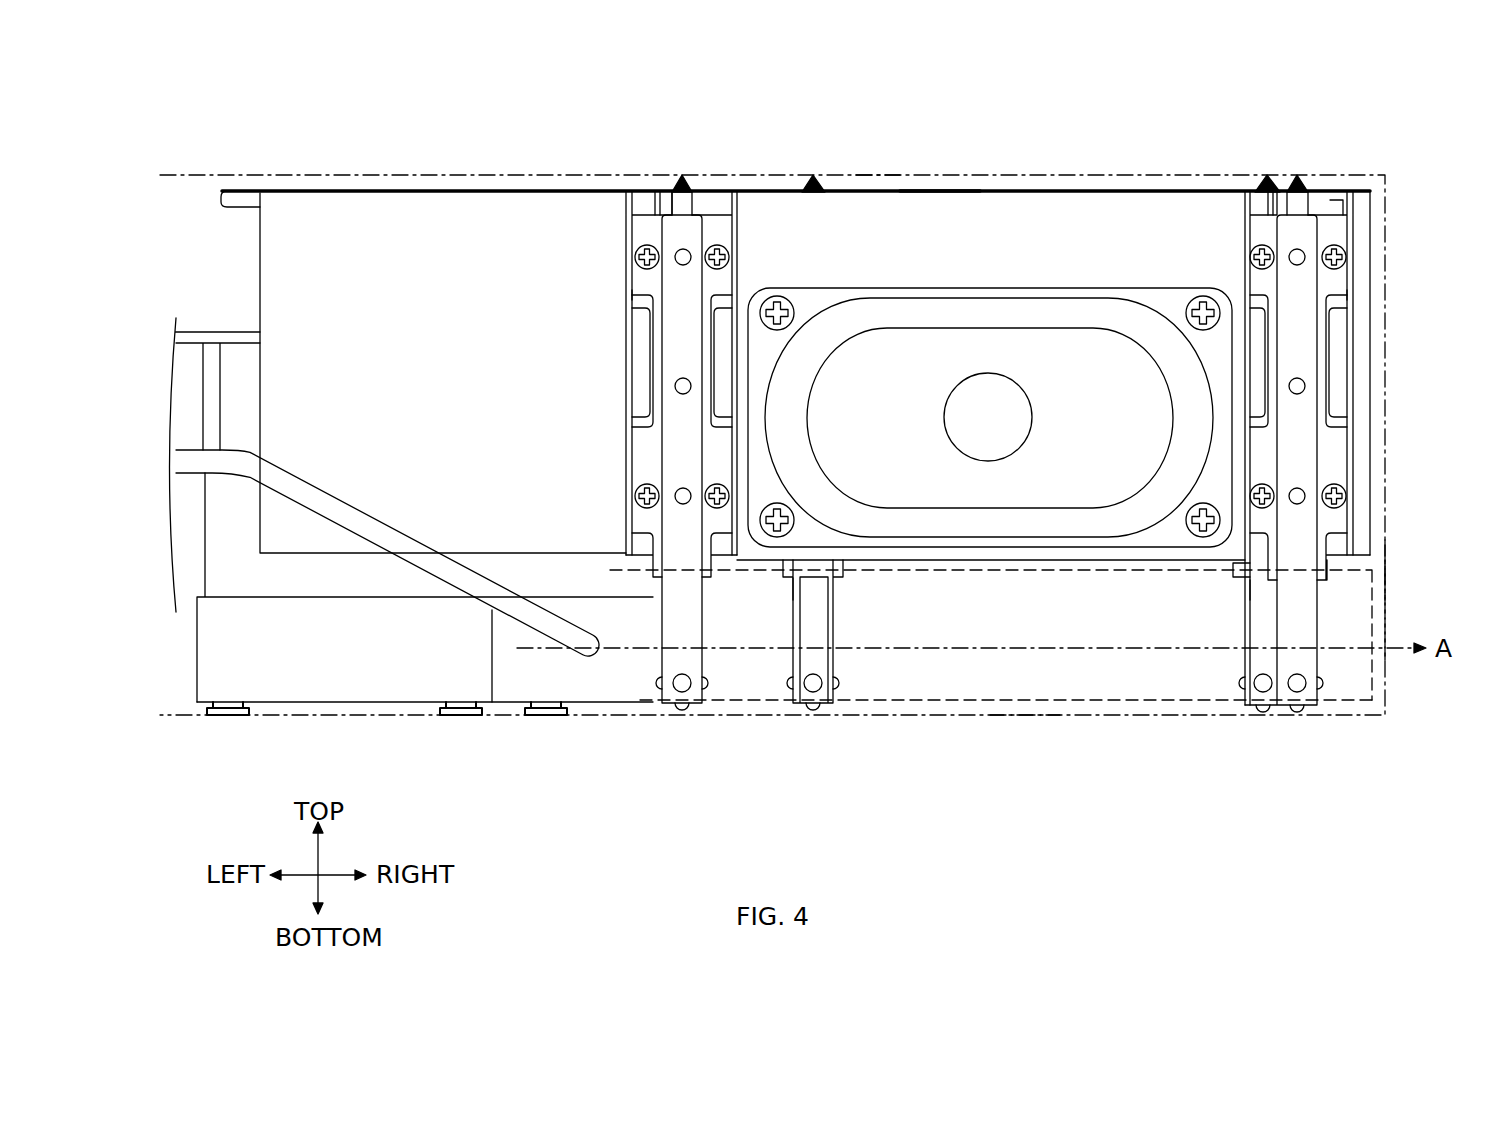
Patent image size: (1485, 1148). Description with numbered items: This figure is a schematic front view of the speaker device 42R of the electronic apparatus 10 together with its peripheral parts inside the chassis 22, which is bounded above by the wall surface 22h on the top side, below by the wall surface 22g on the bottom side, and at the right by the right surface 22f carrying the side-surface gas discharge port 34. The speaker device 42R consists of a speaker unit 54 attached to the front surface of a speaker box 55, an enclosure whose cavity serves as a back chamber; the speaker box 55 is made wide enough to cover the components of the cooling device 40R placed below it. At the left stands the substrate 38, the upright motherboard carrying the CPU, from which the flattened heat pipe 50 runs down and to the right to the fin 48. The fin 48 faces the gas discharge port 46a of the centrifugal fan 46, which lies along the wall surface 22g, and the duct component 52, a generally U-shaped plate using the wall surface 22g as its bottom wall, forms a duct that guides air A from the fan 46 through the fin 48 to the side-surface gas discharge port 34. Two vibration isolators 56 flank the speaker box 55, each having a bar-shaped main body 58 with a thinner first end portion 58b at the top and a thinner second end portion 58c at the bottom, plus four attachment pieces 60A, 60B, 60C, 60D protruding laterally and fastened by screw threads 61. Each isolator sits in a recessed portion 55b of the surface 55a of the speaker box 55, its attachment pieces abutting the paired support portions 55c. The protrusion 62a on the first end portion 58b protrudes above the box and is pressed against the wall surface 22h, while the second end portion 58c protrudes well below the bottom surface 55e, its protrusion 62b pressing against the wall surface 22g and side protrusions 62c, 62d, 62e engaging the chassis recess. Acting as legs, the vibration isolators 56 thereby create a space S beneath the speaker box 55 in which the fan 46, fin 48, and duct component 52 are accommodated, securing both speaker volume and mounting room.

The electronic apparatus 10 is at (192, 79).
The chassis 22 is at (536, 177).
The right surface 22f is at (1426, 610).
The wall surface on the bottom side 22g is at (1026, 712).
The wall surface on the top side 22h is at (874, 177).
The side-surface gas discharge port 34 is at (1389, 580).
The substrate 38 is at (190, 352).
The cooling device 40R is at (192, 646).
The speaker device 42R is at (940, 192).
The fan 46 is at (392, 690).
The gas discharge port 46a is at (504, 690).
The fin 48 is at (589, 690).
The heat pipe 50 is at (357, 523).
The duct component 52 is at (1165, 686).
The speaker unit 54 is at (1073, 347).
The speaker box 55 is at (418, 210).
The surface 55a is at (654, 190).
The recessed portion 55b is at (633, 296).
The support portion 55c is at (1343, 205).
The bottom surface 55e is at (1097, 563).
The vibration isolator 56 is at (708, 193).
The main body 58 is at (675, 345).
The first end portion 58b is at (697, 190).
The second end portion 58c is at (805, 631).
The attachment piece 60A is at (633, 237).
The attachment piece 60B is at (729, 226).
The attachment piece 60C is at (643, 450).
The attachment piece 60D is at (713, 460).
The screw thread 61 is at (635, 258).
The protrusion 62a is at (682, 177).
The protrusion 62b is at (690, 692).
The protrusion 62c is at (656, 690).
The protrusion 62d is at (707, 697).
The protrusion 62e is at (679, 707).
The space S is at (1061, 633).